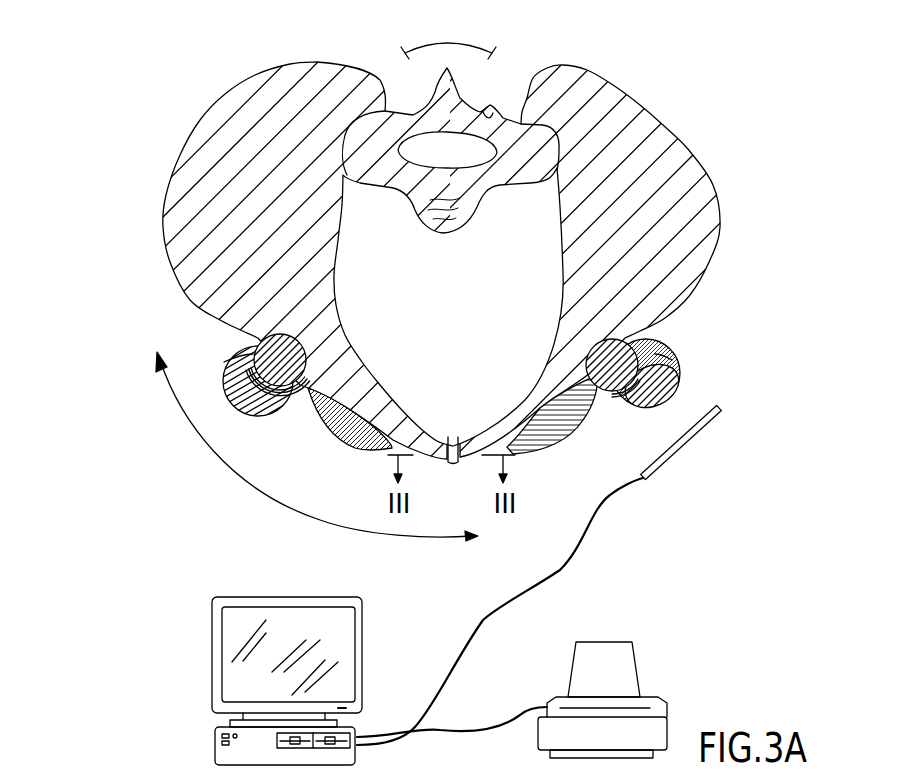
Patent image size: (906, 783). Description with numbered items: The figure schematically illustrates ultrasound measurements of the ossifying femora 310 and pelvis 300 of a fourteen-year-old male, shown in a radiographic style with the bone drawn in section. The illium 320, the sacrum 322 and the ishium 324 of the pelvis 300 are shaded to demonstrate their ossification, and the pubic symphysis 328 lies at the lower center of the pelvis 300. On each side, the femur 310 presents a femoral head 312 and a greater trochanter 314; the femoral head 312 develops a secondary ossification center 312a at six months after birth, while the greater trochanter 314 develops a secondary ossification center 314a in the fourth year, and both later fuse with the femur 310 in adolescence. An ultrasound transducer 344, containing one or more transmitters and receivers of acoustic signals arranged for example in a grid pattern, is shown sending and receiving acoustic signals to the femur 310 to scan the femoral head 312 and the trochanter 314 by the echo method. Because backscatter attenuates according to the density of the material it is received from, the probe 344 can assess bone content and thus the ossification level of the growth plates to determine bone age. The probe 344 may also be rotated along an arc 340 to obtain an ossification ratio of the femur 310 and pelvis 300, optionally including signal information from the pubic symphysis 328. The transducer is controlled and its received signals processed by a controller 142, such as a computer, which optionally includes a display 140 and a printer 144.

The pelvis 300 is at (190, 62).
The femur 310 is at (420, 380).
The femoral head 312 is at (254, 336).
The secondary ossification center 312a is at (256, 337).
The femoral trochanter 314 is at (237, 402).
The secondary ossification center 314a is at (223, 362).
The illium 320 is at (648, 123).
The sacrum 322 is at (499, 44).
The ishium 324 is at (341, 448).
The pubic symphysis 328 is at (453, 464).
The arc 340 is at (235, 472).
The ultrasound transducer 344 is at (690, 450).
The display 140 is at (212, 655).
The controller 142 is at (215, 747).
The printer 144 is at (547, 707).